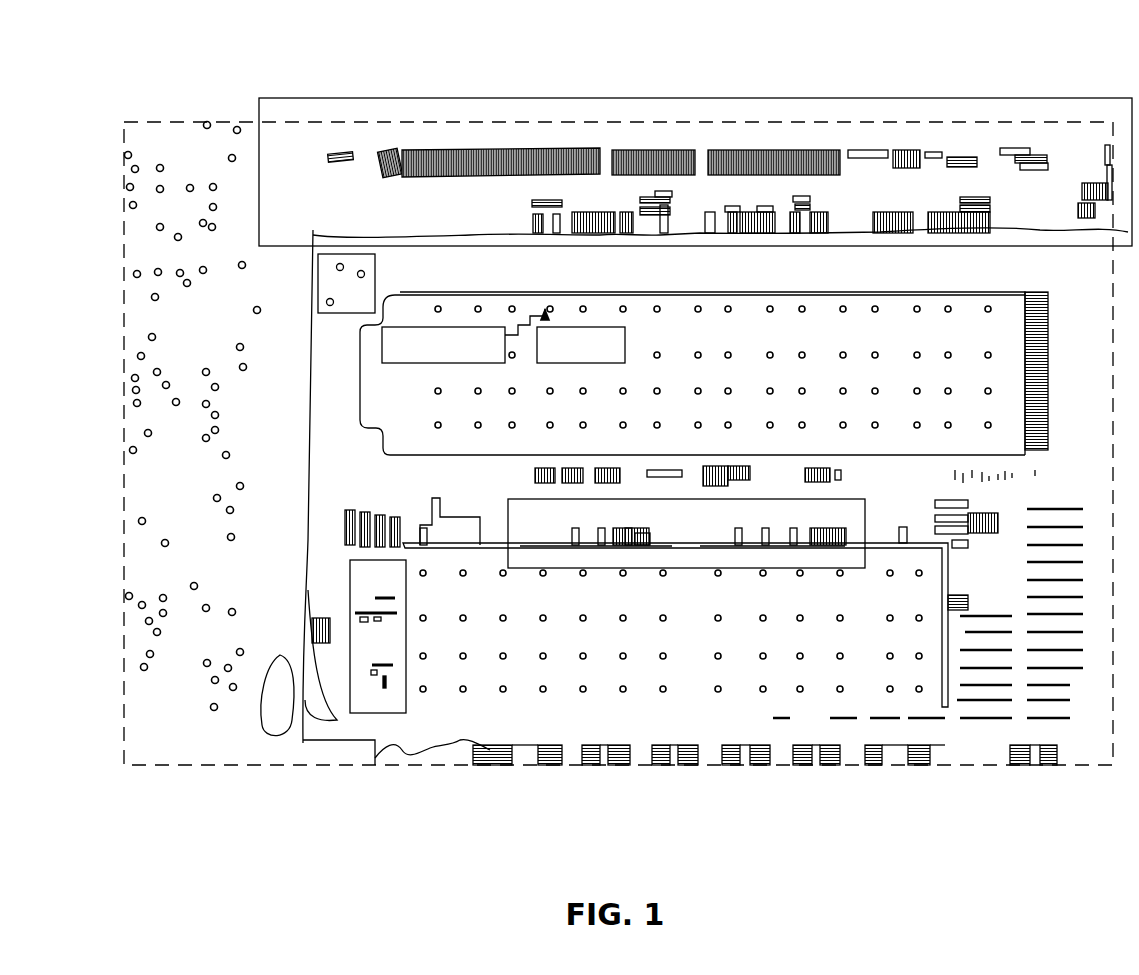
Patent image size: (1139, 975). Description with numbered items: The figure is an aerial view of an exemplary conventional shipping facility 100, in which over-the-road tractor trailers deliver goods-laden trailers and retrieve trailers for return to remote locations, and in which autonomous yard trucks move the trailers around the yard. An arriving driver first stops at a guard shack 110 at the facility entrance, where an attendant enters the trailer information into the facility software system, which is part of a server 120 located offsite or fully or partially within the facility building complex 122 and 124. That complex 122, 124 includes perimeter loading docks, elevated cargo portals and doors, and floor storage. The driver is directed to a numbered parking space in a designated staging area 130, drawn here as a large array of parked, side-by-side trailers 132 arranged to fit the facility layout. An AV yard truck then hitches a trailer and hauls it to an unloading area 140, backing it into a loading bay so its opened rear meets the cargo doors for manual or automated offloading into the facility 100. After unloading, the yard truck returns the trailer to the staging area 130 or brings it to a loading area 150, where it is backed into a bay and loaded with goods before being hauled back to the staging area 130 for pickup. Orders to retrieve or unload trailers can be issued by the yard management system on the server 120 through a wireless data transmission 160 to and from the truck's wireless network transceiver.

The shipping facility 100 is at (970, 86).
The guard shack 110 is at (340, 254).
The server 120 is at (415, 365).
The facility building complex 122 is at (743, 330).
The facility building complex 124 is at (723, 606).
The staging area 130 is at (392, 97).
The parked trailers 132 is at (710, 150).
The unloading area 140 is at (385, 713).
The loading area 150 is at (652, 568).
The wireless data transmission 160 is at (566, 327).